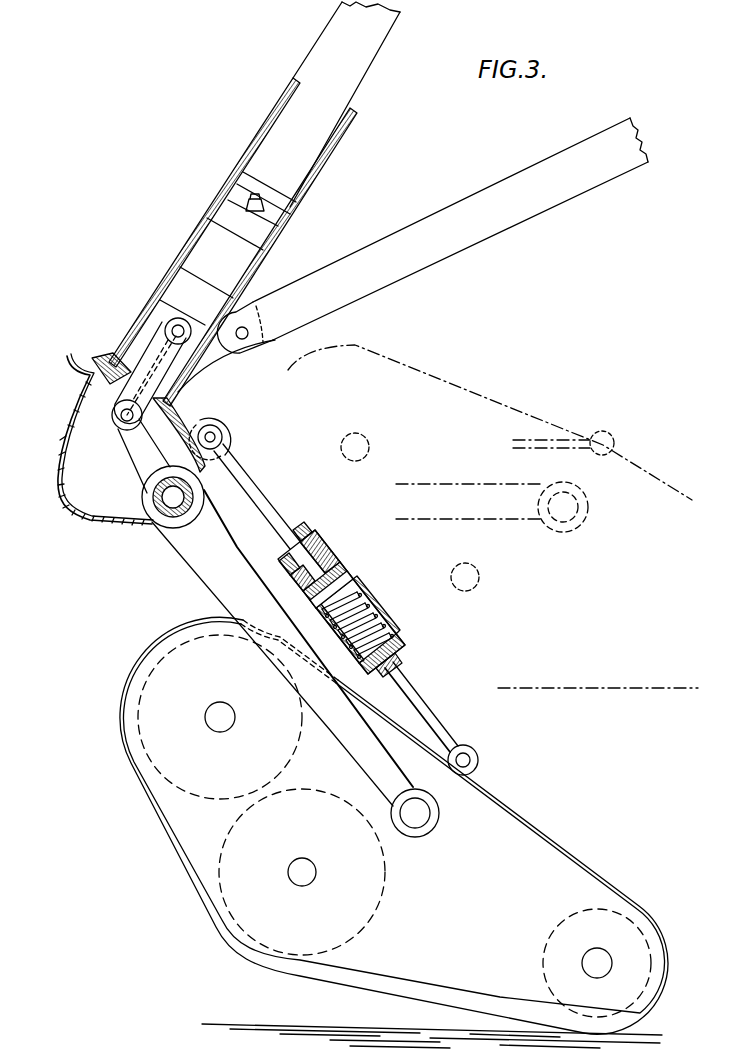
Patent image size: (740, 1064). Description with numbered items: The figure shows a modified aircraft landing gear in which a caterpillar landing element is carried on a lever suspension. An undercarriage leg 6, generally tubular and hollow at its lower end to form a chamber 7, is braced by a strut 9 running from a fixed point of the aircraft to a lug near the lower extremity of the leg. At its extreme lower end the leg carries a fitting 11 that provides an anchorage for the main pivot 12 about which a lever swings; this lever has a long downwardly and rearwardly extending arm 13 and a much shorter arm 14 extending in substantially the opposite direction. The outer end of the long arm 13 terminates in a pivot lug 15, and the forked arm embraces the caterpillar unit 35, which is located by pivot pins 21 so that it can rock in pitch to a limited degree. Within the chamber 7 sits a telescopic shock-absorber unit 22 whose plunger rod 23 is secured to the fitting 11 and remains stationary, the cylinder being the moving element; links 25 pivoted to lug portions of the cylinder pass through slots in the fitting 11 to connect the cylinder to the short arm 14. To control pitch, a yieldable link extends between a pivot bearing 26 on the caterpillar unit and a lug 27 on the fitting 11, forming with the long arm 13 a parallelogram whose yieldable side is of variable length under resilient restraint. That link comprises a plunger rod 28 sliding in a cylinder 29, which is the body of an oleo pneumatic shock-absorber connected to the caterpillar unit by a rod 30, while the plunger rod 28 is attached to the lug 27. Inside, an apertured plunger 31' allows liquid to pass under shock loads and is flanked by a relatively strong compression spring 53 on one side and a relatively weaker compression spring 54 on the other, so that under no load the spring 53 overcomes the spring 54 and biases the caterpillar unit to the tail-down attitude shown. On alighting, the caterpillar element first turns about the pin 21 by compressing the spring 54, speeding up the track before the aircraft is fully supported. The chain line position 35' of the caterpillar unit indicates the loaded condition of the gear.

The undercarriage leg 6 is at (330, 58).
The chamber 7 is at (274, 218).
The strut 9 is at (513, 213).
The fitting 11 is at (105, 428).
The main pivot 12 is at (172, 500).
The long lever arm 13 is at (240, 589).
The short lever arm 14 is at (148, 460).
The pivot lug 15 is at (438, 822).
The pivot pin 21 is at (418, 834).
The telescopic shock-absorber unit 22 is at (212, 245).
The plunger rod 23 is at (163, 328).
The links 25 is at (160, 337).
The pivot bearing 26 is at (478, 768).
The lug 27 is at (200, 421).
The plunger rod 28 is at (247, 483).
The cylinder 29 is at (367, 598).
The rod 30 is at (420, 698).
The plunger 31' is at (350, 577).
The caterpillar unit 35 is at (394, 825).
The chain line position of the caterpillar unit 35' is at (493, 516).
The strong compression spring 53 is at (388, 617).
The weak compression spring 54 is at (311, 531).